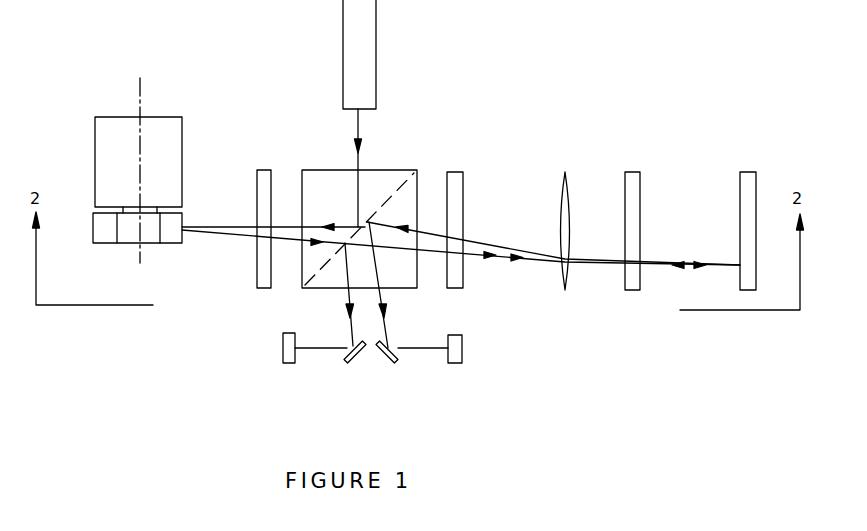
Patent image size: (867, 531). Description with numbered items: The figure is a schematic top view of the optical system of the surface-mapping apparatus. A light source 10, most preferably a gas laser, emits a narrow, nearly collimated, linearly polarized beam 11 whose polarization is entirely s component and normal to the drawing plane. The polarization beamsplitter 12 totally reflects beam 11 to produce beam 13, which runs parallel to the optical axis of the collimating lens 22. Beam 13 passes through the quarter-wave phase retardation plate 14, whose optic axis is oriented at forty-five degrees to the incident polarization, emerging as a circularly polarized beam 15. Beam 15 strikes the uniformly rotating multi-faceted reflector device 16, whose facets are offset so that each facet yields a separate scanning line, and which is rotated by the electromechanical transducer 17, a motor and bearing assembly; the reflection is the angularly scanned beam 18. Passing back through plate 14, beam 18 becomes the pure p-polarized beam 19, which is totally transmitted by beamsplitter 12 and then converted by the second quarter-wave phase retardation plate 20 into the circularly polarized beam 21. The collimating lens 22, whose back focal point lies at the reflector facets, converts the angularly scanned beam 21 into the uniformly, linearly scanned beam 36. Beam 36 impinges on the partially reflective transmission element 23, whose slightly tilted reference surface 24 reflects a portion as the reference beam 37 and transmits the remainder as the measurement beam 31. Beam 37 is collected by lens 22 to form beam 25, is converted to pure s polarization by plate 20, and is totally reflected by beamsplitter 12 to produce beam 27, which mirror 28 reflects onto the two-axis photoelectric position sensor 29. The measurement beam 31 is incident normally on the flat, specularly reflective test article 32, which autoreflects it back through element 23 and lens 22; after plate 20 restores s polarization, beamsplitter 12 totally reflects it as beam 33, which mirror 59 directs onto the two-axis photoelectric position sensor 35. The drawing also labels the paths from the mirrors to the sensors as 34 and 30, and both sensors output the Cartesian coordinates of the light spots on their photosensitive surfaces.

The light source 10 is at (376, 13).
The linearly polarized beam 11 is at (358, 127).
The polarization beamsplitter 12 is at (376, 170).
The beam 13 is at (290, 227).
The quarter-wave phase retardation plate 14 is at (257, 170).
The circularly polarized beam 15 is at (222, 228).
The multi-faceted reflector device 16 is at (93, 243).
The electromechanical transducer 17 is at (95, 137).
The angularly scanned beam 18 is at (220, 232).
The beam 19 is at (290, 243).
The second quarter-wave phase retardation plate 20 is at (455, 172).
The circularly polarized beam 21 is at (505, 258).
The collimating lens 22 is at (562, 172).
The partially reflective transmission element 23 is at (630, 172).
The reference surface 24 is at (640, 195).
The beam 25 is at (488, 242).
The beam 27 is at (386, 324).
The mirror 28 is at (392, 363).
The two-axis photoelectric position sensor 29 is at (462, 342).
The beam 30 is at (433, 350).
The measurement beam 31 is at (662, 265).
The test article 32 is at (740, 193).
The beam 33 is at (348, 316).
The beam 34 is at (307, 350).
The two-axis photoelectric position sensor 35 is at (283, 363).
The linearly scanned beam 36 is at (580, 272).
The reference beam 37 is at (578, 262).
The mirror 59 is at (350, 366).